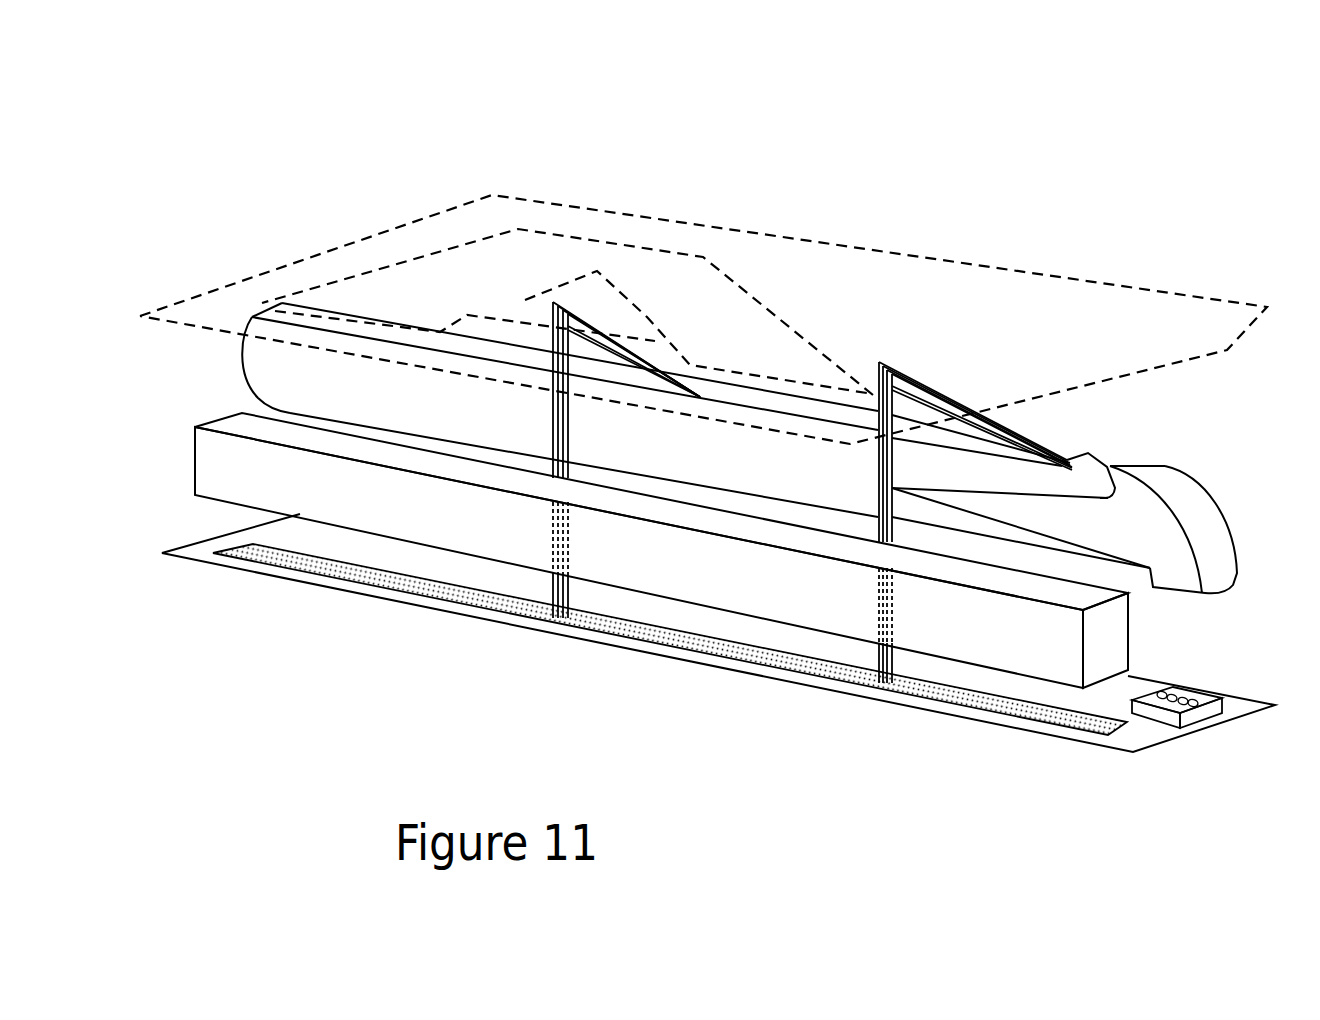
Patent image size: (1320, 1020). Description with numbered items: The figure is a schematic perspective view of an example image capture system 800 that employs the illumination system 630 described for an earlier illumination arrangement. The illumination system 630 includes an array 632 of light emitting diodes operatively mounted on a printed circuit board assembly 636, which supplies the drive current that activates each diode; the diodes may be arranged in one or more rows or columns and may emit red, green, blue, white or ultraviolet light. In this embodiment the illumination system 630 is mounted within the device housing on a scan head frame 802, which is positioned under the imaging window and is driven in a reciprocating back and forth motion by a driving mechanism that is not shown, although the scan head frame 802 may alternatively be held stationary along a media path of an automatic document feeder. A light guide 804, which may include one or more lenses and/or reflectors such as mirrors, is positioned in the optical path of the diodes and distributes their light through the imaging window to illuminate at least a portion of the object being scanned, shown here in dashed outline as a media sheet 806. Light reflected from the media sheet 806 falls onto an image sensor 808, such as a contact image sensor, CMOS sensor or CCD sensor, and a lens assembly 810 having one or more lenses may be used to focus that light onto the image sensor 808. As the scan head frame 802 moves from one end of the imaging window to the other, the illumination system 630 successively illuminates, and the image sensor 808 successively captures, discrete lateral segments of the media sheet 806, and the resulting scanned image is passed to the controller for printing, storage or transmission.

The image capture system 800 is at (804, 150).
The scan head frame 802 is at (190, 545).
The light guide 804 is at (1203, 493).
The media sheet 806 is at (692, 257).
The image sensor 808 is at (368, 575).
The lens assembly 810 is at (217, 418).
The illumination system 630 is at (1220, 745).
The array 632 is at (1209, 691).
The printed circuit board assembly 636 is at (1213, 702).